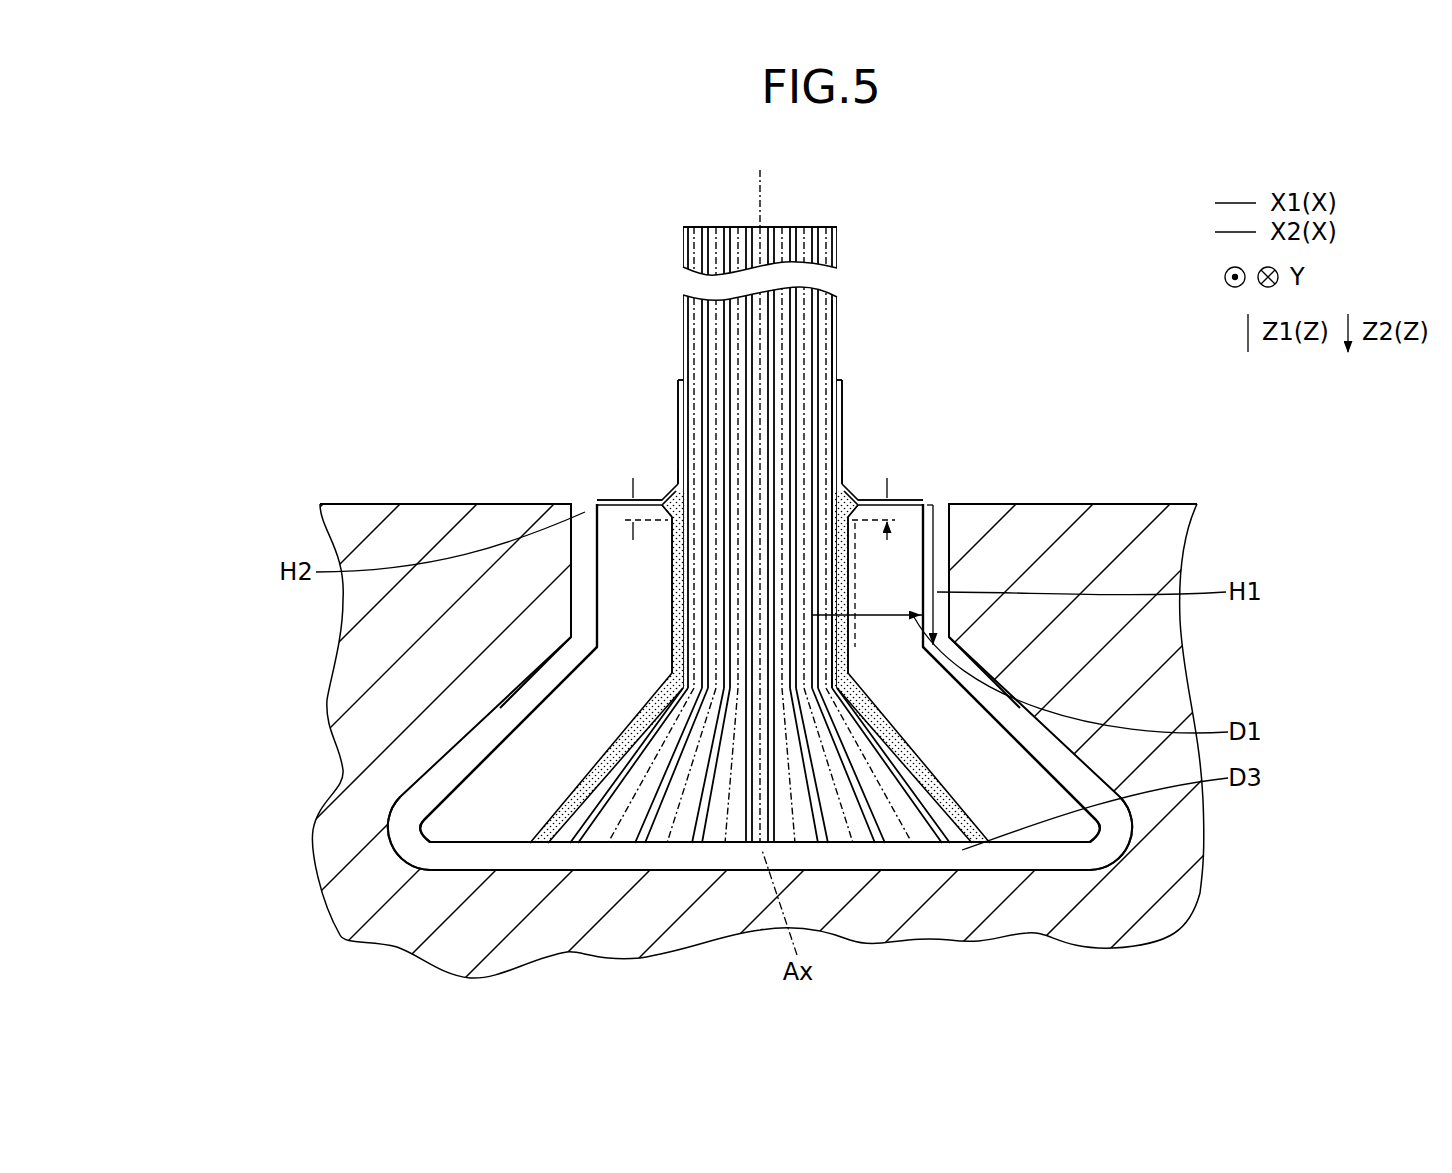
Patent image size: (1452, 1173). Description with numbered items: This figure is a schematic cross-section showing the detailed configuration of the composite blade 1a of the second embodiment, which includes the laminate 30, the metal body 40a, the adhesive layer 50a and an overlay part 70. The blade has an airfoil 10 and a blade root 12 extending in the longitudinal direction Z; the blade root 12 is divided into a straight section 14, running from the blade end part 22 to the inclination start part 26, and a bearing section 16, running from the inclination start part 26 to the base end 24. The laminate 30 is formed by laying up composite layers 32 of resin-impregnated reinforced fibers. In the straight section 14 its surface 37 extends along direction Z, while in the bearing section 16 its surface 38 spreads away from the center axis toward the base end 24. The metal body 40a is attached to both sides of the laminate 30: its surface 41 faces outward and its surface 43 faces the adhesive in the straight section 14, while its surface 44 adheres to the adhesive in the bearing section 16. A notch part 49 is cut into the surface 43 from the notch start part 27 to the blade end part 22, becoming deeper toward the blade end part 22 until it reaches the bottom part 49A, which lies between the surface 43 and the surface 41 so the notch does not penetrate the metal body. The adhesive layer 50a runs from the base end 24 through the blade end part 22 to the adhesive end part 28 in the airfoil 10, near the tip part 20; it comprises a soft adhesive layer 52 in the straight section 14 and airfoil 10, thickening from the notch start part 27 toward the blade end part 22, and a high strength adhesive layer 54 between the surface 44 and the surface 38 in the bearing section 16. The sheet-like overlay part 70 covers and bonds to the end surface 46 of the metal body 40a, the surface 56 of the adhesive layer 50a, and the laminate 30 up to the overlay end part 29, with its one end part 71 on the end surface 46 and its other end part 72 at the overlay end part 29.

The composite blade 1a is at (982, 264).
The airfoil 10 is at (952, 327).
The blade root 12 is at (726, 742).
The straight section 14 is at (990, 535).
The bearing section 16 is at (1132, 858).
The tip part 20 is at (845, 232).
The blade end part 22 is at (590, 497).
The base end 24 is at (967, 848).
The inclination start part 26 is at (975, 715).
The notch start part 27 is at (666, 527).
The adhesive end part 28 is at (675, 463).
The overlay end part 29 is at (676, 374).
The laminate 30 is at (679, 302).
The composite layers 32 is at (836, 410).
The surface 37 is at (533, 777).
The surface 38 is at (540, 800).
The metal body 40a is at (492, 715).
The surface 41 is at (572, 543).
The surface 43 is at (572, 605).
The surface 44 is at (560, 833).
The end surface 46 is at (592, 492).
The notch part 49 is at (633, 486).
The bottom part 49A is at (930, 505).
The adhesive layer 50a is at (760, 733).
The soft adhesive layer 52 is at (597, 625).
The high strength adhesive layer 54 is at (575, 788).
The surface 56 is at (671, 477).
The overlay part 70 is at (673, 397).
The one end part 71 is at (596, 503).
The other end part 72 is at (672, 387).